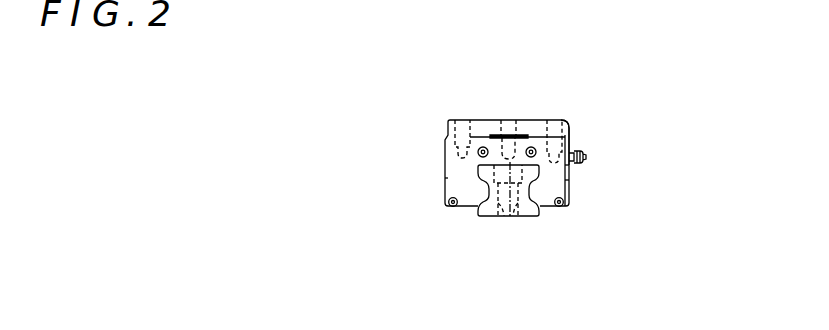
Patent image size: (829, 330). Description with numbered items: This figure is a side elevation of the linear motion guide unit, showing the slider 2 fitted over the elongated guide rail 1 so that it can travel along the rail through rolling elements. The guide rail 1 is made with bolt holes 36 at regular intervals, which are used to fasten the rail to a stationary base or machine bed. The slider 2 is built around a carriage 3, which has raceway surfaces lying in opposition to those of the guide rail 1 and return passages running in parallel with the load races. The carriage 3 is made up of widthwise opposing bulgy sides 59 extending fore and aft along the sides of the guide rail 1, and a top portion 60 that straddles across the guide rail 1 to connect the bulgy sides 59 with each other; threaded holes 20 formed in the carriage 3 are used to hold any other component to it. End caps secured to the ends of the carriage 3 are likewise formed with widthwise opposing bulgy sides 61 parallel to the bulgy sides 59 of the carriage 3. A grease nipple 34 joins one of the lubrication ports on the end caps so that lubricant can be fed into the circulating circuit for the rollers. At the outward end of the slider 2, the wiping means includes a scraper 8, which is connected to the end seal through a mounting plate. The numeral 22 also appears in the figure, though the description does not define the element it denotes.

The guide rail 1 is at (525, 217).
The slider 2 is at (440, 153).
The carriage 3 is at (573, 128).
The scraper 8 is at (553, 185).
The threaded holes 20 is at (511, 126).
The screws 22 is at (535, 148).
The grease nipple 34 is at (586, 157).
The bolt holes 36 is at (503, 211).
The bulgy sides 59 is at (463, 182).
The top portion 60 is at (482, 132).
The bulgy sides 61 is at (550, 175).